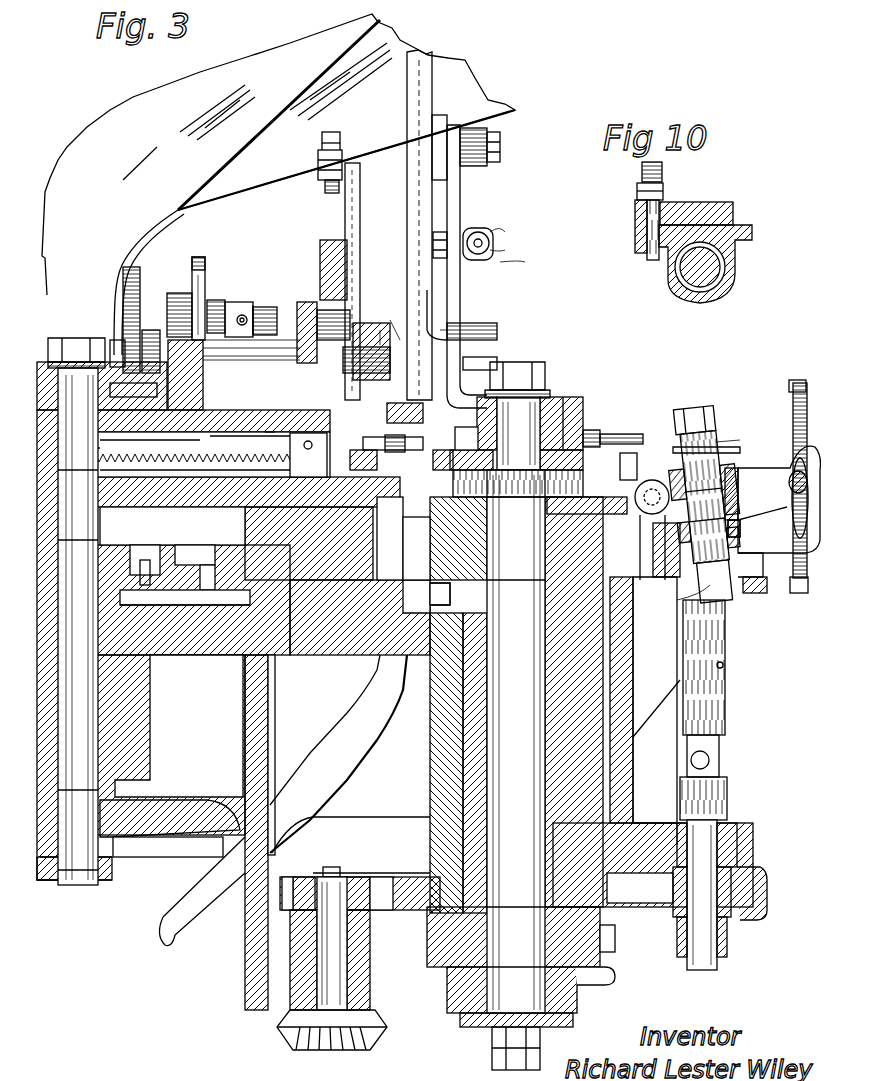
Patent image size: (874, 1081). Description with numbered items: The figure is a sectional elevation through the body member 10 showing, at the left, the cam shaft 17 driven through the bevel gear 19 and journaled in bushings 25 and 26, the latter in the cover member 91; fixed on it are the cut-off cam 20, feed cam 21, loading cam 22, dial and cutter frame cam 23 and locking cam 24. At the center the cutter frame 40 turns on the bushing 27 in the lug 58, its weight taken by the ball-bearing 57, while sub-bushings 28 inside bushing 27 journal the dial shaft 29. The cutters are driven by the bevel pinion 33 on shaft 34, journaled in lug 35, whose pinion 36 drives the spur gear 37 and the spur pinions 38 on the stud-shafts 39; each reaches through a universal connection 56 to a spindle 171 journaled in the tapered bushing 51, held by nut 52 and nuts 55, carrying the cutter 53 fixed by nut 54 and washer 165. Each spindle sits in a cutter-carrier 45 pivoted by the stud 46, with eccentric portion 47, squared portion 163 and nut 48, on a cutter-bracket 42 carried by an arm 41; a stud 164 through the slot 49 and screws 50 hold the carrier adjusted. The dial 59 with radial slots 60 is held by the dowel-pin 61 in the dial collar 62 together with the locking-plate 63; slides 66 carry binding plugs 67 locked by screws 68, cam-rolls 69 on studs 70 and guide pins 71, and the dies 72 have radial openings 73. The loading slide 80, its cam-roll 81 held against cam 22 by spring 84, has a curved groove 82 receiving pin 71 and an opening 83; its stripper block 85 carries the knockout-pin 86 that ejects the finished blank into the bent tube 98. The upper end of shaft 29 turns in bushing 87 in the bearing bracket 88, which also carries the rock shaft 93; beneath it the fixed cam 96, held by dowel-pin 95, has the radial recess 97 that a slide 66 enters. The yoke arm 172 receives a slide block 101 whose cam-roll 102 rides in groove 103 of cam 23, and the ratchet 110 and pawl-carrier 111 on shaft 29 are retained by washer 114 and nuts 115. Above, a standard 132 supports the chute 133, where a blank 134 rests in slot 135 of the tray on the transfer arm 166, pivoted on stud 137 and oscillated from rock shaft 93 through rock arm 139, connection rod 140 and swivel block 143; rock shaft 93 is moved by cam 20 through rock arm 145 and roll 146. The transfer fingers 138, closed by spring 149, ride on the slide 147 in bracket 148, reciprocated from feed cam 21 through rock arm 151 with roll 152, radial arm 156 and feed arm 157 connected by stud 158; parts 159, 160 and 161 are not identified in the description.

In FIG. 3, the body member 10 is at (247, 995).
In FIG. 3, the cam shaft 17 is at (72, 886).
In FIG. 3, the bevel gear 19 is at (160, 837).
In FIG. 3, the cut-off cam 20 is at (110, 345).
In FIG. 3, the feed cam 21 is at (150, 330).
In FIG. 3, the loading cam 22 is at (195, 518).
In FIG. 3, the dial and cutter frame cam 23 is at (240, 605).
In FIG. 3, the locking cam 24 is at (185, 605).
In FIG. 3, the bushing 25 is at (130, 788).
In FIG. 3, the bushing 26 is at (112, 456).
In FIG. 3, the bushing 27 is at (425, 818).
In FIG. 3, the sub-bushings 28 is at (432, 587).
In FIG. 3, the dial shaft 29 is at (487, 760).
In FIG. 3, the bevel pinion 33 is at (295, 1047).
In FIG. 3, the shaft 34 is at (285, 1010).
In FIG. 3, the lug 35 is at (290, 958).
In FIG. 3, the pinion 36 is at (247, 922).
In FIG. 3, the spur gear 37 is at (395, 912).
In FIG. 3, the spur pinions 38 is at (752, 922).
In FIG. 3, the stud-shafts 39 is at (720, 817).
In FIG. 3, the cutter frame 40 is at (634, 822).
In FIG. 3, the projecting arms 41 is at (740, 605).
In FIG. 3, the cutter-bracket 42 is at (762, 565).
In FIG. 10, the cutter-bracket 42 is at (734, 214).
In FIG. 3, the cutter-carrier 45 is at (742, 475).
In FIG. 10, the cutter-carrier 45 is at (738, 272).
In FIG. 3, the stud 46 is at (655, 515).
In FIG. 10, the stud 46 is at (640, 225).
In FIG. 10, the eccentric portion 47 is at (648, 252).
In FIG. 10, the nut 48 is at (665, 192).
In FIG. 3, the slot 49 is at (805, 594).
In FIG. 3, the screws 50 is at (793, 395).
In FIG. 3, the bushing 51 is at (745, 468).
In FIG. 10, the bushing 51 is at (735, 262).
In FIG. 3, the nut 52 is at (742, 537).
In FIG. 3, the cutter 53 is at (734, 445).
In FIG. 3, the nut 54 is at (708, 430).
In FIG. 3, the nuts 55 is at (686, 575).
In FIG. 3, the universal connection 56 is at (727, 680).
In FIG. 3, the ball-bearing 57 is at (432, 603).
In FIG. 3, the lug 58 is at (433, 742).
In FIG. 3, the dial 59 is at (652, 442).
In FIG. 3, the radial slots 60 is at (540, 420).
In FIG. 3, the dowel-pin 61 is at (605, 450).
In FIG. 3, the dial collar 62 is at (594, 484).
In FIG. 3, the locking-plate 63 is at (415, 550).
In FIG. 3, the slides 66 is at (490, 368).
In FIG. 3, the binding plug 67 is at (630, 416).
In FIG. 3, the lock screw 68 is at (475, 360).
In FIG. 3, the cam-roll 69 is at (525, 400).
In FIG. 3, the stud 70 is at (512, 360).
In FIG. 3, the guide pin 71 is at (506, 516).
In FIG. 3, the dies 72 is at (390, 436).
In FIG. 3, the radial opening 73 is at (445, 332).
In FIG. 3, the loading slide 80 is at (322, 650).
In FIG. 3, the cam-roll 81 is at (300, 690).
In FIG. 3, the curved groove 82 is at (350, 650).
In FIG. 3, the opening 83 is at (363, 469).
In FIG. 3, the spring 84 is at (240, 460).
In FIG. 3, the stripper block 85 is at (305, 435).
In FIG. 3, the knockout-pin 86 is at (395, 403).
In FIG. 3, the bushing 87 is at (555, 440).
In FIG. 3, the bearing bracket 88 is at (582, 440).
In FIG. 3, the cover member 91 is at (274, 423).
In FIG. 3, the rock shaft 93 is at (560, 400).
In FIG. 3, the dowel-pin 95 is at (560, 405).
In FIG. 3, the fixed cam 96 is at (570, 415).
In FIG. 3, the radial recess 97 is at (466, 438).
In FIG. 3, the tube 98 is at (283, 800).
In FIG. 3, the slide block 101 is at (200, 640).
In FIG. 3, the cam-roll 102 is at (238, 530).
In FIG. 3, the groove 103 is at (205, 640).
In FIG. 3, the ratchet 110 is at (615, 945).
In FIG. 3, the pawl-carrier 111 is at (614, 975).
In FIG. 3, the washer 114 is at (575, 1020).
In FIG. 3, the nuts 115 is at (542, 1042).
In FIG. 3, the standard 132 is at (278, 184).
In FIG. 3, the chute 133 is at (433, 94).
In FIG. 3, the blank 134 is at (465, 330).
In FIG. 3, the slot 135 is at (515, 262).
In FIG. 3, the stud 137 is at (502, 147).
In FIG. 3, the transfer fingers 138 is at (460, 300).
In FIG. 3, the rock arm 139 is at (500, 250).
In FIG. 3, the connection rod 140 is at (505, 232).
In FIG. 3, the swivel block 143 is at (478, 231).
In FIG. 3, the rock arm 145 is at (123, 262).
In FIG. 3, the roll 146 is at (118, 310).
In FIG. 3, the slide 147 is at (345, 206).
In FIG. 3, the bracket 148 is at (330, 240).
In FIG. 3, the spring 149 is at (395, 325).
In FIG. 3, the rock arm 151 is at (198, 257).
In FIG. 3, the roll 152 is at (180, 293).
In FIG. 3, the radial arm 156 is at (232, 302).
In FIG. 3, the feed arm 157 is at (305, 302).
In FIG. 3, the stud 158 is at (382, 330).
In FIG. 3, the screw 159 is at (244, 315).
In FIG. 3, the roller 160 is at (288, 288).
In FIG. 3, the plate 161 is at (256, 302).
In FIG. 10, the squared portion 163 is at (641, 170).
In FIG. 3, the stud 164 is at (803, 373).
In FIG. 3, the washer 165 is at (735, 445).
In FIG. 3, the transfer arm 166 is at (463, 178).
In FIG. 3, the spindle 171 is at (722, 440).
In FIG. 10, the spindle 171 is at (715, 280).
In FIG. 3, the yoke arm 172 is at (250, 640).